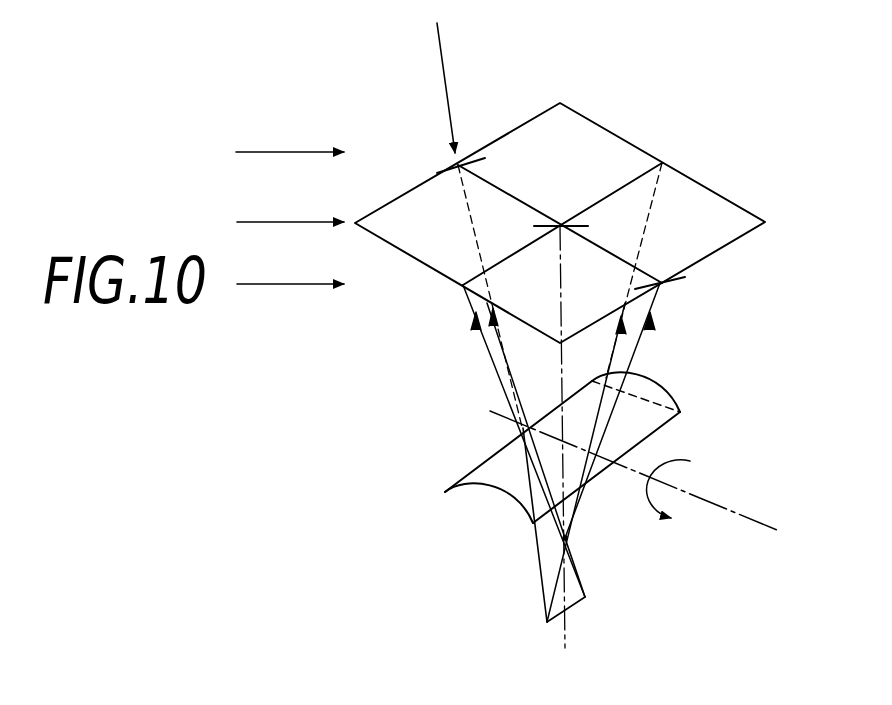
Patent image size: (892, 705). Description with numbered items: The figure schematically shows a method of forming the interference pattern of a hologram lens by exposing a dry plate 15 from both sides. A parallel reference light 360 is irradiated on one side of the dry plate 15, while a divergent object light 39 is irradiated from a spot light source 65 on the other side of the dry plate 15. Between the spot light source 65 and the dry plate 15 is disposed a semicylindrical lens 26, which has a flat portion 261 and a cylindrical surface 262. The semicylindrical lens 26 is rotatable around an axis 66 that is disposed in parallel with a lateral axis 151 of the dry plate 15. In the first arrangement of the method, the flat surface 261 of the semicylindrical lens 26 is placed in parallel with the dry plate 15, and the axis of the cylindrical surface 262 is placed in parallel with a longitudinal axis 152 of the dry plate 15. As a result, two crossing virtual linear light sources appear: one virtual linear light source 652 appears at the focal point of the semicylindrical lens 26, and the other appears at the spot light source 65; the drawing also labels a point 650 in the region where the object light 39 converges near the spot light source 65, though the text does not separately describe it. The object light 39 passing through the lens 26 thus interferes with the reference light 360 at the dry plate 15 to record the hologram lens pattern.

The dry plate 15 is at (592, 118).
The lateral axis 151 is at (505, 195).
The longitudinal axis 152 is at (628, 188).
The parallel reference light 360 is at (277, 286).
The divergent object light 39 is at (491, 356).
The semicylindrical lens 26 is at (452, 420).
The flat portion 261 is at (478, 505).
The cylindrical surface 262 is at (657, 390).
The spot light source 65 is at (548, 553).
The focal point 650 is at (575, 547).
The virtual linear light source 652 is at (586, 598).
The axis 66 is at (755, 522).